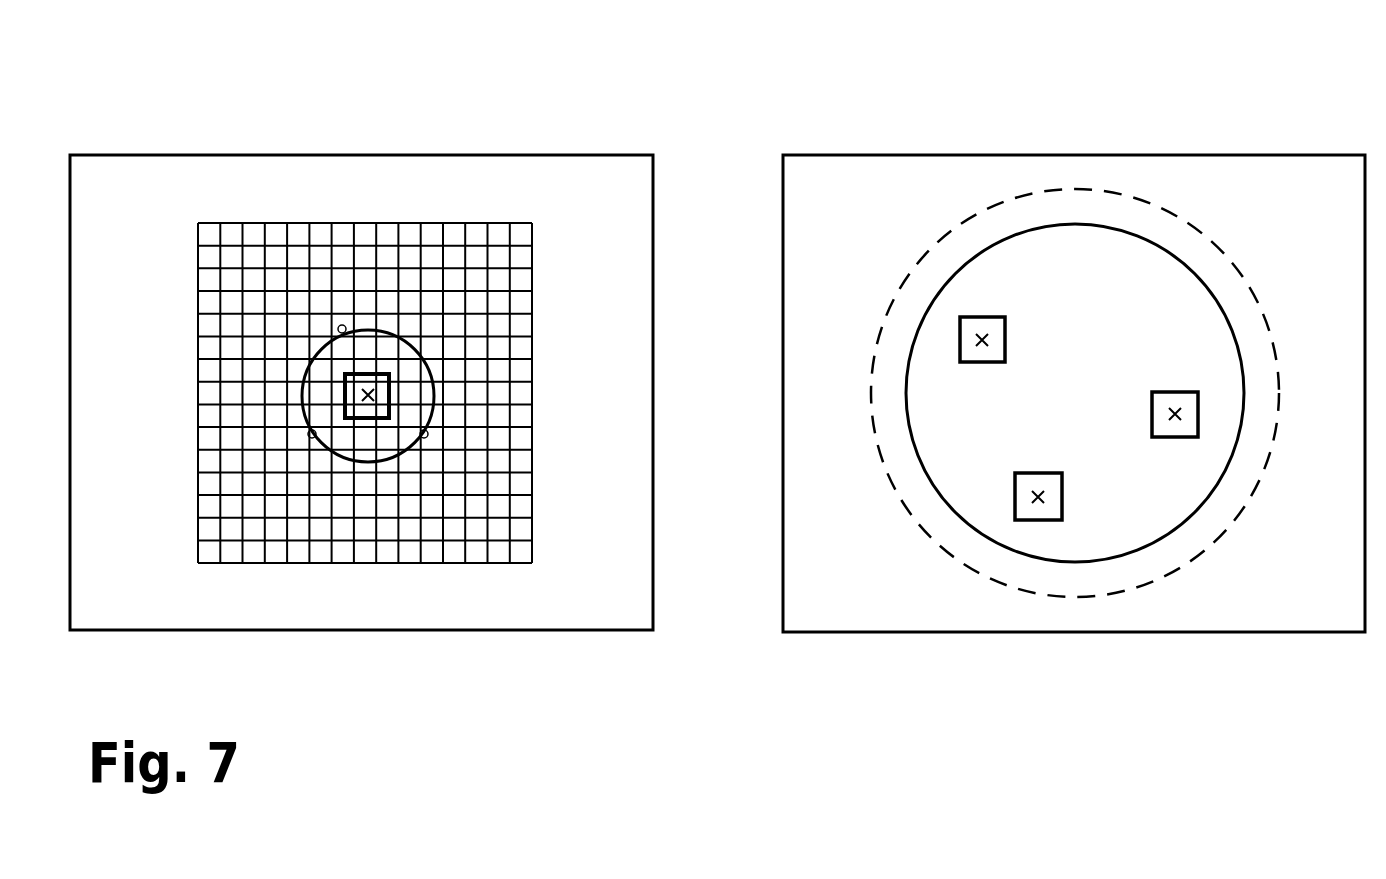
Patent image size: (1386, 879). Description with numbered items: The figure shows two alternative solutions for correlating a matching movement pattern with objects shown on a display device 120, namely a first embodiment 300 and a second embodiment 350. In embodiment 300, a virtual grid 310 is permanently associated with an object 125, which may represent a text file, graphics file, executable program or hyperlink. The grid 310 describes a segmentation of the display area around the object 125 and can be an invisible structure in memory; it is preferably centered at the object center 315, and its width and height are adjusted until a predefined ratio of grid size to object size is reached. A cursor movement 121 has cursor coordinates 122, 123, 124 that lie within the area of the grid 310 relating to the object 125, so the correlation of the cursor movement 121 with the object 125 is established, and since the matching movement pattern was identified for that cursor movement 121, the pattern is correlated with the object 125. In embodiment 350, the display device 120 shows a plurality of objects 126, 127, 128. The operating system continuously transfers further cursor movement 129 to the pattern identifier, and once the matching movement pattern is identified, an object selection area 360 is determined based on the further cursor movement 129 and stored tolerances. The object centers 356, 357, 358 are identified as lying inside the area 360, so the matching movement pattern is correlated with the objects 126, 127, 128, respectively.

The embodiment 300 is at (168, 78).
The embodiment 350 is at (878, 78).
The display device 120 is at (525, 155).
The virtual grid 310 is at (480, 222).
The cursor movement 121 is at (377, 330).
The cursor coordinate 122 is at (308, 436).
The cursor coordinate 123 is at (336, 332).
The cursor coordinate 124 is at (428, 434).
The object 125 is at (392, 378).
The object center 315 is at (393, 398).
The further cursor movement 129 is at (990, 247).
The object selection area 360 is at (1120, 192).
The object 126 is at (1005, 345).
The object 127 is at (1152, 428).
The object 128 is at (1062, 505).
The object center 356 is at (982, 340).
The object center 357 is at (1175, 413).
The object center 358 is at (1038, 497).